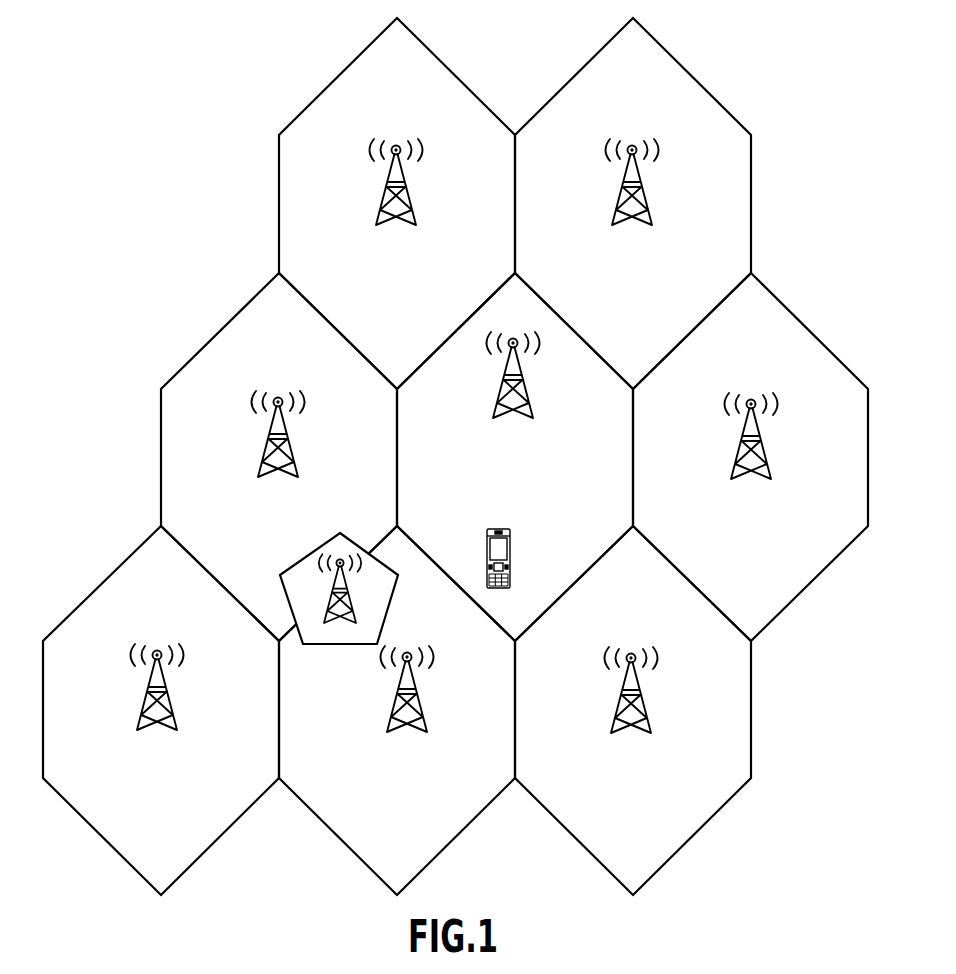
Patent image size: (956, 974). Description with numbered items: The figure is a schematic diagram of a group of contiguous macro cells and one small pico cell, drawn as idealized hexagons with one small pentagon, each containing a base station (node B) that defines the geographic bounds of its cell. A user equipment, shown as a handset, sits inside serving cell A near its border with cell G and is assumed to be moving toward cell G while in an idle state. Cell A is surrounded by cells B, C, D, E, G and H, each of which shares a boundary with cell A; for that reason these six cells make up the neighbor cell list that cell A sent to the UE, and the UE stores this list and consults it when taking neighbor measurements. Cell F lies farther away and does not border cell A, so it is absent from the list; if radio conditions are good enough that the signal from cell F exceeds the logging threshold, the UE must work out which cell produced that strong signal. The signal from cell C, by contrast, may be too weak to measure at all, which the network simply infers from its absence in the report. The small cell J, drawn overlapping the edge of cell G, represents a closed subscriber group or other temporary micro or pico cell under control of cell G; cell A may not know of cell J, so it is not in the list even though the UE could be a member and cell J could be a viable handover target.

The serving cell A is at (515, 457).
The cell B is at (397, 203).
The cell C is at (633, 203).
The cell D is at (279, 457).
The cell E is at (750, 457).
The cell F is at (161, 710).
The cell G is at (397, 710).
The cell H is at (633, 710).
The cell J is at (339, 588).